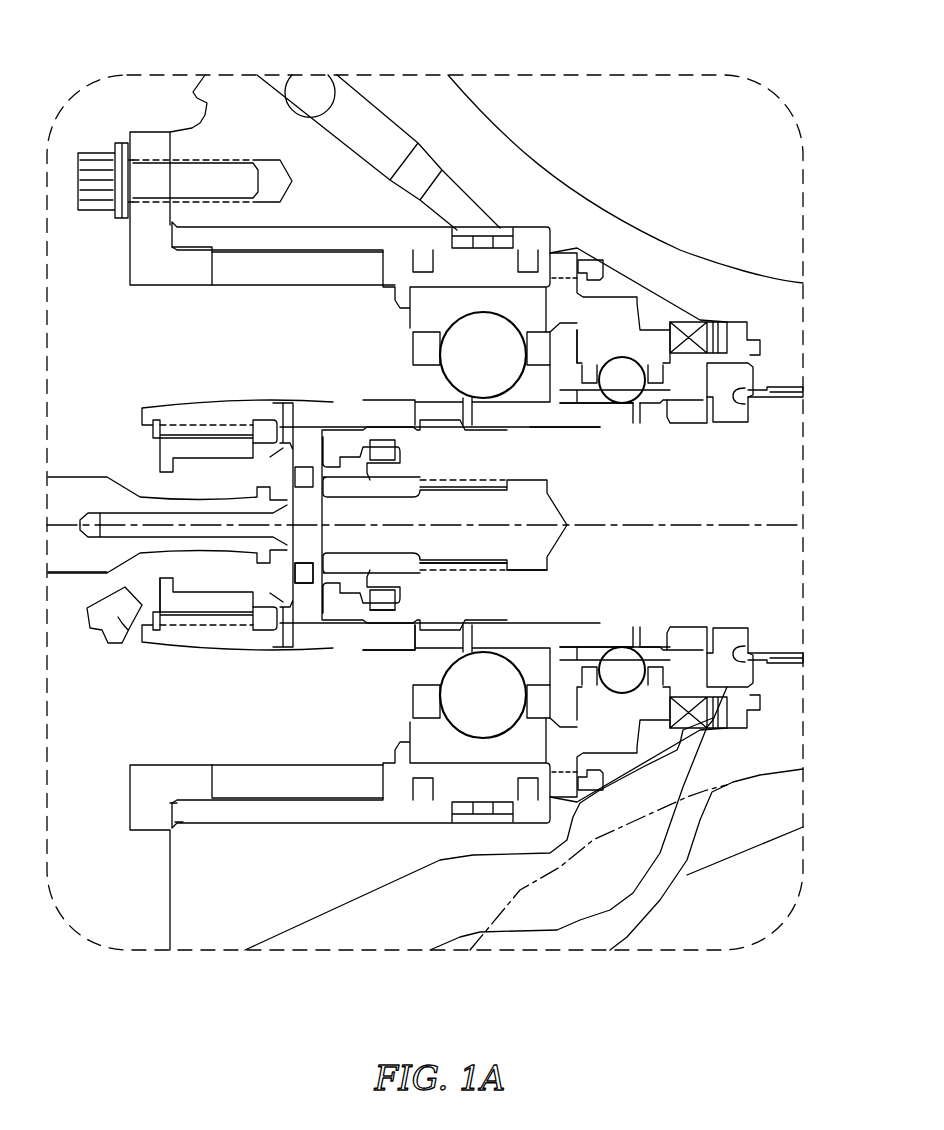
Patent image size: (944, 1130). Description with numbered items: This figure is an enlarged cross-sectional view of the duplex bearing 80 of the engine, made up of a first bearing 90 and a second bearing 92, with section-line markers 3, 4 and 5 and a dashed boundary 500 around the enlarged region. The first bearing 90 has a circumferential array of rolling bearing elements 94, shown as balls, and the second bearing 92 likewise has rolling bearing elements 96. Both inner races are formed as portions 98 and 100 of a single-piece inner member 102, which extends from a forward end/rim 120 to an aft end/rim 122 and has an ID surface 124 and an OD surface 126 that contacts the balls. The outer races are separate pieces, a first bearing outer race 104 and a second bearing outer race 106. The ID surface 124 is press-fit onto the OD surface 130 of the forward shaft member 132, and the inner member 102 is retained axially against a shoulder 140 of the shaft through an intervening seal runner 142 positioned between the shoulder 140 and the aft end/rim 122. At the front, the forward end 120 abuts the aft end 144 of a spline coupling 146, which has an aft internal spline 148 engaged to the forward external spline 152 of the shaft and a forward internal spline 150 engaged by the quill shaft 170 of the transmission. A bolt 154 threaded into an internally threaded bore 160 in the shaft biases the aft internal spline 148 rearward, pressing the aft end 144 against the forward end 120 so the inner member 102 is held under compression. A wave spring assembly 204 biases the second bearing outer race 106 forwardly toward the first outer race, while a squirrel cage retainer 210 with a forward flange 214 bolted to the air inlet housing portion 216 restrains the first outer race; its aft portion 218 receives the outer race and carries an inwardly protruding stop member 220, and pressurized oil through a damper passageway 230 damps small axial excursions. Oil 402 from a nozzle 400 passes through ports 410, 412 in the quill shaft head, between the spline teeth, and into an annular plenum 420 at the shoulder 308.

The duplex bearing 80 is at (607, 288).
The first bearing 90 is at (488, 300).
The second bearing 92 is at (645, 343).
The rolling bearing elements 94 is at (497, 335).
The rolling bearing elements 96 is at (618, 365).
The inner race portion 98 is at (505, 413).
The inner race portion 100 is at (620, 420).
The inner member 102 is at (573, 430).
The first bearing outer race 104 is at (423, 320).
The second bearing outer race 106 is at (692, 340).
The forward end/rim 120 is at (362, 420).
The aft end/rim 122 is at (677, 412).
The inner diameter (ID) surface 124 is at (571, 415).
The outer diameter (OD) surface 126 is at (565, 285).
The outer diameter (OD) surface 130 is at (540, 638).
The forward shaft member 132 is at (540, 583).
The shoulder 140 is at (765, 393).
The seal runner 142 is at (718, 392).
The aft end 144 is at (388, 630).
The spline coupling 146 is at (226, 640).
The aft internal spline 148 is at (340, 433).
The forward internal spline 150 is at (180, 430).
The forward external spline 152 is at (337, 433).
The bolt 154 is at (378, 440).
The internally threaded bore 160 is at (450, 555).
The quill shaft 170 is at (67, 560).
The wave spring assembly 204 is at (717, 322).
The squirrel cage retainer 210 is at (263, 268).
The forward flange 214 is at (143, 143).
The air inlet housing portion 216 is at (420, 90).
The aft portion 218 is at (458, 267).
The stop member 220 is at (395, 297).
The damper passageway 230 is at (342, 100).
The shoulder 308 is at (403, 618).
The nozzle 400 is at (149, 581).
The oil 402 is at (130, 580).
The port 410 is at (283, 448).
The port 412 is at (283, 600).
The annular plenum 420 is at (378, 610).
The boundary 500 is at (783, 523).
The section line 3 is at (468, 345).
The section line 4 is at (633, 197).
The section line 5 is at (430, 423).